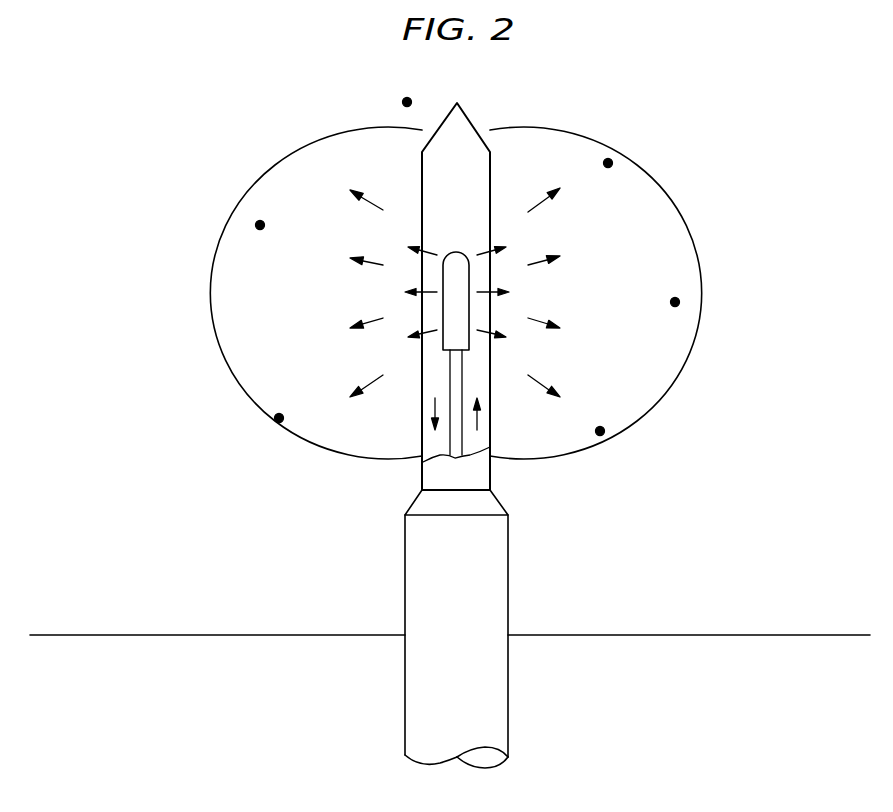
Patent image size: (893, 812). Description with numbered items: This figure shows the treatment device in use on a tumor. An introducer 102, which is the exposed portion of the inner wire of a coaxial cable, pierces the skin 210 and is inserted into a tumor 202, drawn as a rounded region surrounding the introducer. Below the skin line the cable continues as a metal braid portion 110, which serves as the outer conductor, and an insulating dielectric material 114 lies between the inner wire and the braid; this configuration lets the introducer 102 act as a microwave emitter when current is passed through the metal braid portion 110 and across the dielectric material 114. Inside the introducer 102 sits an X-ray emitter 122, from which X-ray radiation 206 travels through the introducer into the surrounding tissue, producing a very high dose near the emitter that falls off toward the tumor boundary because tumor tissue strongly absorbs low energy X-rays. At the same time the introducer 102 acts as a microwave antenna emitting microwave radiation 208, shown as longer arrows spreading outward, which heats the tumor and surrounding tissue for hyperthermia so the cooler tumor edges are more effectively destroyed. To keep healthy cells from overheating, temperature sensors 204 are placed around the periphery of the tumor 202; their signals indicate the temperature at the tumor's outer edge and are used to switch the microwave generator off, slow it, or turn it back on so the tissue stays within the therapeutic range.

The introducer 102 is at (493, 183).
The metal braid portion 110 is at (492, 690).
The insulating dielectric material 114 is at (487, 505).
The X-ray emitter 122 is at (455, 262).
The tumor 202 is at (602, 237).
The temperature sensors 204 is at (259, 228).
The X-ray radiation 206 is at (512, 245).
The microwave radiation 208 is at (567, 190).
The skin 210 is at (691, 636).